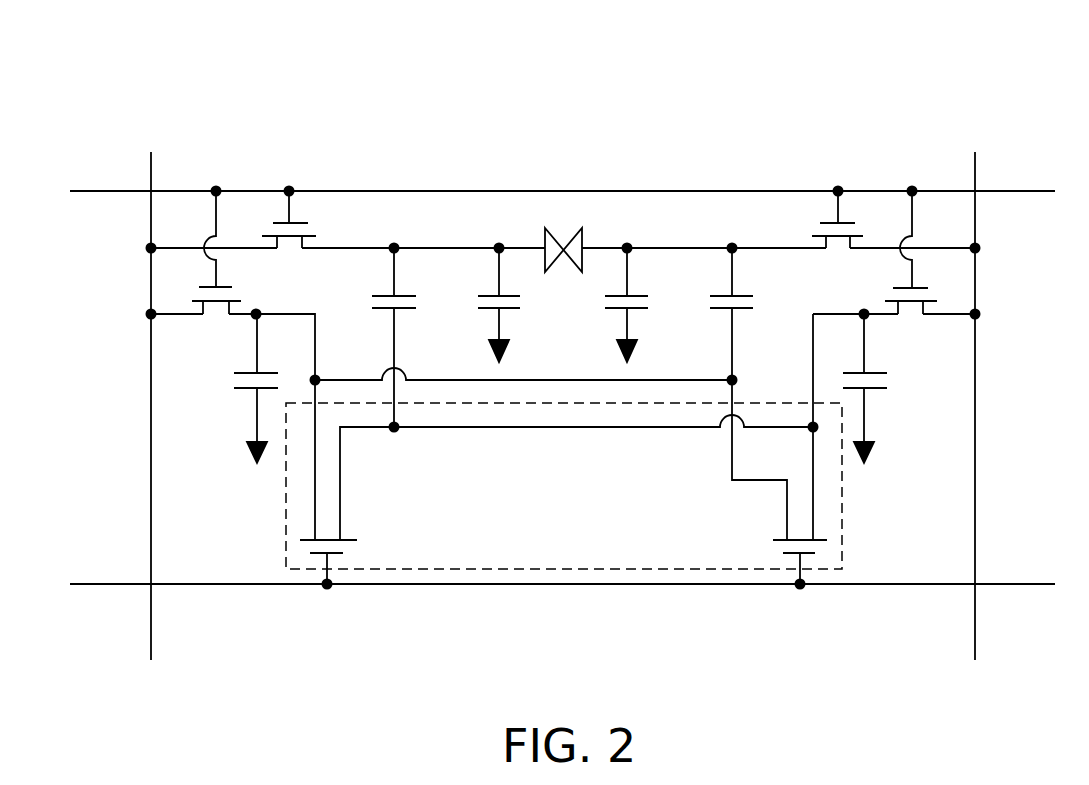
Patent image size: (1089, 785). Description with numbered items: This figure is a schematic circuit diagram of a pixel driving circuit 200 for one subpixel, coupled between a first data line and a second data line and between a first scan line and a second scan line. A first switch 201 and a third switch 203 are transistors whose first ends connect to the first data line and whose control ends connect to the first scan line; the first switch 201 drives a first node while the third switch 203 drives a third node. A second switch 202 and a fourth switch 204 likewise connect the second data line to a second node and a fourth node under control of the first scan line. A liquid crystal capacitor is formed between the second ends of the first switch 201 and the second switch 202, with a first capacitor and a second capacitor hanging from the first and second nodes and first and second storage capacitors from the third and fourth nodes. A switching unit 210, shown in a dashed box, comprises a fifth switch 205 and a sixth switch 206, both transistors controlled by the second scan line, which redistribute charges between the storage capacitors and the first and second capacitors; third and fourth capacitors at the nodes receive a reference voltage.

The pixel driving circuit 200 is at (92, 43).
The first switch 201 is at (315, 227).
The second switch 202 is at (862, 228).
The third switch 203 is at (194, 293).
The fourth switch 204 is at (935, 293).
The fifth switch 205 is at (349, 547).
The sixth switch 206 is at (778, 548).
The switching unit 210 is at (523, 572).